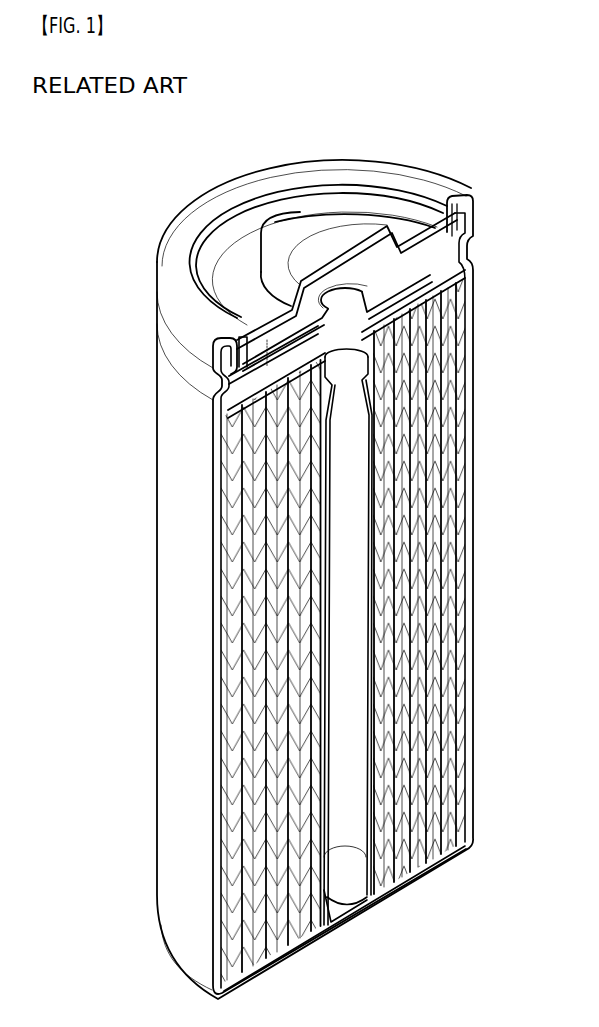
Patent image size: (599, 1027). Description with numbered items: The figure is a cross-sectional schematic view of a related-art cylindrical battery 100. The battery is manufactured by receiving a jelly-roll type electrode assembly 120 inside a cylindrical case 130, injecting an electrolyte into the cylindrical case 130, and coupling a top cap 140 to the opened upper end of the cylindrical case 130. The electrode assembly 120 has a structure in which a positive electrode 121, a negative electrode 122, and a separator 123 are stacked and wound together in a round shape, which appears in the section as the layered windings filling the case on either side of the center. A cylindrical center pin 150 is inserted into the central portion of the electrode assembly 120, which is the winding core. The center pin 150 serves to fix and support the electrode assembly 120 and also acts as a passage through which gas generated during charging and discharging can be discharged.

The cylindrical battery 100 is at (112, 151).
The jelly-roll type electrode assembly 120 is at (389, 631).
The positive electrode 121 is at (440, 832).
The negative electrode 122 is at (447, 853).
The separator 123 is at (448, 623).
The cylindrical case 130 is at (473, 498).
The top cap 140 is at (483, 187).
The cylindrical center pin 150 is at (323, 600).